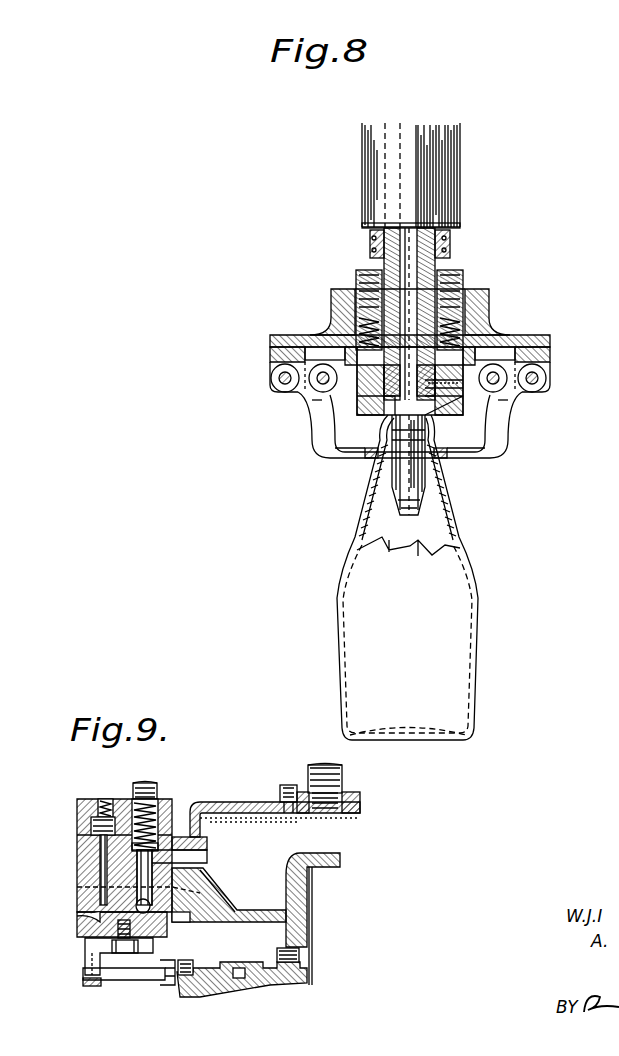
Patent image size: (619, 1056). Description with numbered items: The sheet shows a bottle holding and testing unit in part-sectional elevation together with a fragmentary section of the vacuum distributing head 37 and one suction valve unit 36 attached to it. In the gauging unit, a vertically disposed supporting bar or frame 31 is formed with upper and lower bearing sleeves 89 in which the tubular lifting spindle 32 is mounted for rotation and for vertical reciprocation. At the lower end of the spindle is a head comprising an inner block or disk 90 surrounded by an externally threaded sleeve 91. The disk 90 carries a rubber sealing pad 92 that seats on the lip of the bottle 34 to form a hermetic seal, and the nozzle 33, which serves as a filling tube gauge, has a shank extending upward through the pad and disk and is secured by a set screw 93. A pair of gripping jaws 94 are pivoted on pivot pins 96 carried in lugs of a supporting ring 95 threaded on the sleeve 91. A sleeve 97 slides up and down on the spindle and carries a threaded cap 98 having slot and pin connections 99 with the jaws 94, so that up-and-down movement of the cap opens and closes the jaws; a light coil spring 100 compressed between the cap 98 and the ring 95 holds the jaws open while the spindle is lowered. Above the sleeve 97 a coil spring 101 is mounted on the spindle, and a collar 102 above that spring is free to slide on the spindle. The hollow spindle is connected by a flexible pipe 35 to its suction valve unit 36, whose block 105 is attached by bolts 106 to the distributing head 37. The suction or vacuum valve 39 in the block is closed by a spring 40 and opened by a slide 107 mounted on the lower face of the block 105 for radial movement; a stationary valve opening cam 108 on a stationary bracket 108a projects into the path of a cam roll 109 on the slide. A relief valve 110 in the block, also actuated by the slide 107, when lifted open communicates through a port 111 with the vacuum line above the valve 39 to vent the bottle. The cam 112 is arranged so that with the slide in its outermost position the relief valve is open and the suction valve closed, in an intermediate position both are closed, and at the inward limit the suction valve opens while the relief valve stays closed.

In FIG. 8, the supporting bar or frame 31 is at (462, 192).
In FIG. 8, the bearing sleeves 89 is at (365, 204).
In FIG. 8, the collar 102 is at (371, 242).
In FIG. 8, the coil spring 101 is at (440, 270).
In FIG. 8, the lifting spindle 32 is at (438, 288).
In FIG. 8, the sleeve 97 is at (356, 283).
In FIG. 8, the light coil spring 100 is at (488, 306).
In FIG. 8, the cap 98 is at (489, 331).
In FIG. 8, the slot and pin connections 99 is at (278, 382).
In FIG. 8, the pivot pins 96 is at (318, 388).
In FIG. 8, the supporting ring 95 is at (350, 393).
In FIG. 8, the inner block or disk 90 is at (368, 395).
In FIG. 8, the sealing pad 92 is at (381, 418).
In FIG. 8, the set screw 93 is at (438, 418).
In FIG. 8, the sleeve 91 is at (465, 395).
In FIG. 8, the gripping jaws 94 is at (328, 456).
In FIG. 8, the nozzle 33 is at (420, 480).
In FIG. 8, the bottle 34 is at (343, 614).
In FIG. 9, the flexible pipe 35 is at (156, 795).
In FIG. 9, the spring 40 is at (148, 826).
In FIG. 9, the suction or vacuum valve 39 is at (154, 862).
In FIG. 9, the vacuum distributing head 37 is at (244, 802).
In FIG. 9, the relief valve 110 is at (100, 838).
In FIG. 9, the port 111 is at (104, 855).
In FIG. 9, the suction valve unit 36 is at (77, 871).
In FIG. 9, the bolts 106 is at (76, 887).
In FIG. 9, the block 105 is at (77, 900).
In FIG. 9, the cam 112 is at (86, 926).
In FIG. 9, the valve opening cam 108 is at (95, 948).
In FIG. 9, the slide 107 is at (140, 937).
In FIG. 9, the cam roll 109 is at (140, 950).
In FIG. 9, the stationary bracket 108a is at (128, 972).